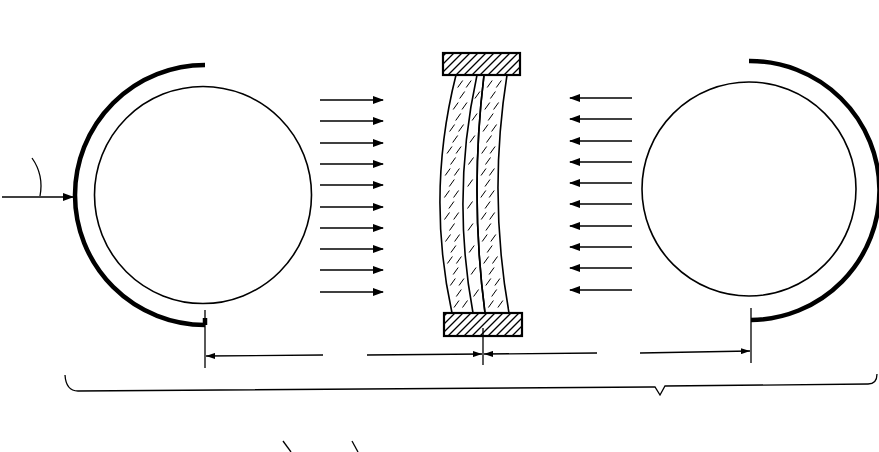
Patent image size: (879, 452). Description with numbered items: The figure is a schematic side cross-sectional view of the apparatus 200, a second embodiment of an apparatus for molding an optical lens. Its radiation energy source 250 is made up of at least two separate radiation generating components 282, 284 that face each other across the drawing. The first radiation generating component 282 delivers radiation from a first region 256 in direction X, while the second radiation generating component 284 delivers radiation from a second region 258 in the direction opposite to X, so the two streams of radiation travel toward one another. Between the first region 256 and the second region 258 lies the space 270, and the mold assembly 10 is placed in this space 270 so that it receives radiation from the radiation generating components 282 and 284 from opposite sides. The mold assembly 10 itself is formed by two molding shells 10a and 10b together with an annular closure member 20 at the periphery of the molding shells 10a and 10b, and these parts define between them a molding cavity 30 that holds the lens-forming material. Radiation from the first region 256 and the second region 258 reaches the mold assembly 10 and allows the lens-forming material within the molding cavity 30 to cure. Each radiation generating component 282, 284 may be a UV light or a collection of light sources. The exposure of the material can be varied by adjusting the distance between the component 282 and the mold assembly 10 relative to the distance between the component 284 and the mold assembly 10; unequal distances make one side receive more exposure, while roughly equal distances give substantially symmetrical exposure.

The apparatus 200 is at (112, 48).
The mold assembly 10 is at (477, 168).
The molding shell 10a is at (452, 128).
The molding shell 10b is at (497, 128).
The annular closure member 20 is at (483, 53).
The molding cavity 30 is at (476, 110).
The radiation energy source 250 is at (84, 254).
The first region 256 is at (312, 253).
The second region 258 is at (642, 250).
The space 270 is at (435, 210).
The first radiation generating component 282 is at (227, 128).
The second radiation generating component 284 is at (727, 128).